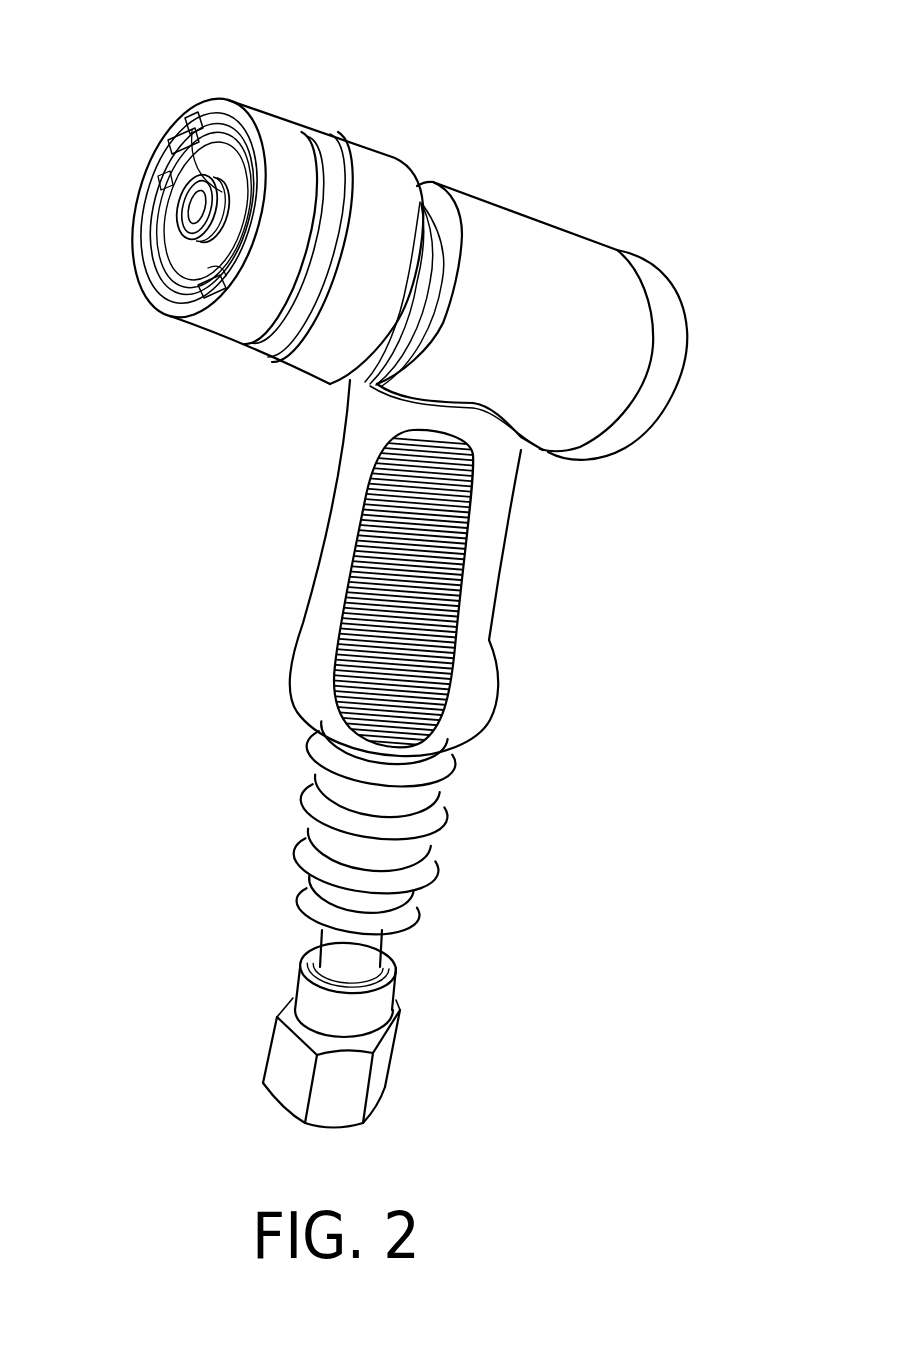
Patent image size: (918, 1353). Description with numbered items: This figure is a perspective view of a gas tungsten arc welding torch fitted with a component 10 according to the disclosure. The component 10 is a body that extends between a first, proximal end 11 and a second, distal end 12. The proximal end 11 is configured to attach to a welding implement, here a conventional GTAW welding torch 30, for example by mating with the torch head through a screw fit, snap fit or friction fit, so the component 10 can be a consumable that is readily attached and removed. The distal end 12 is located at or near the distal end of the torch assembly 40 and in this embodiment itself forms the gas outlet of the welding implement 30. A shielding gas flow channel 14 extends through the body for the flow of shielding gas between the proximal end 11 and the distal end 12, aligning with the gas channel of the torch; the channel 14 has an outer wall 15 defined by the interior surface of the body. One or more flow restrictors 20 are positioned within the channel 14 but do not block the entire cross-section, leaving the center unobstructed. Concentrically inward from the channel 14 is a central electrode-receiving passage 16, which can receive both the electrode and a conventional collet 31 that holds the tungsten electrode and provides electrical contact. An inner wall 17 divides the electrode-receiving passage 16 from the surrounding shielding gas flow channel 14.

The component 10 is at (357, 84).
The proximal end 11 is at (415, 177).
The distal end 12 is at (158, 303).
The shielding gas flow channel 14 is at (165, 187).
The outer wall 15 is at (237, 257).
The central electrode-receiving passage 16 is at (192, 116).
The inner wall 17 is at (222, 190).
The flow restrictor 20 is at (195, 263).
The GTAW welding torch 30 is at (670, 340).
The collet 31 is at (188, 207).
The torch assembly 40 is at (646, 133).